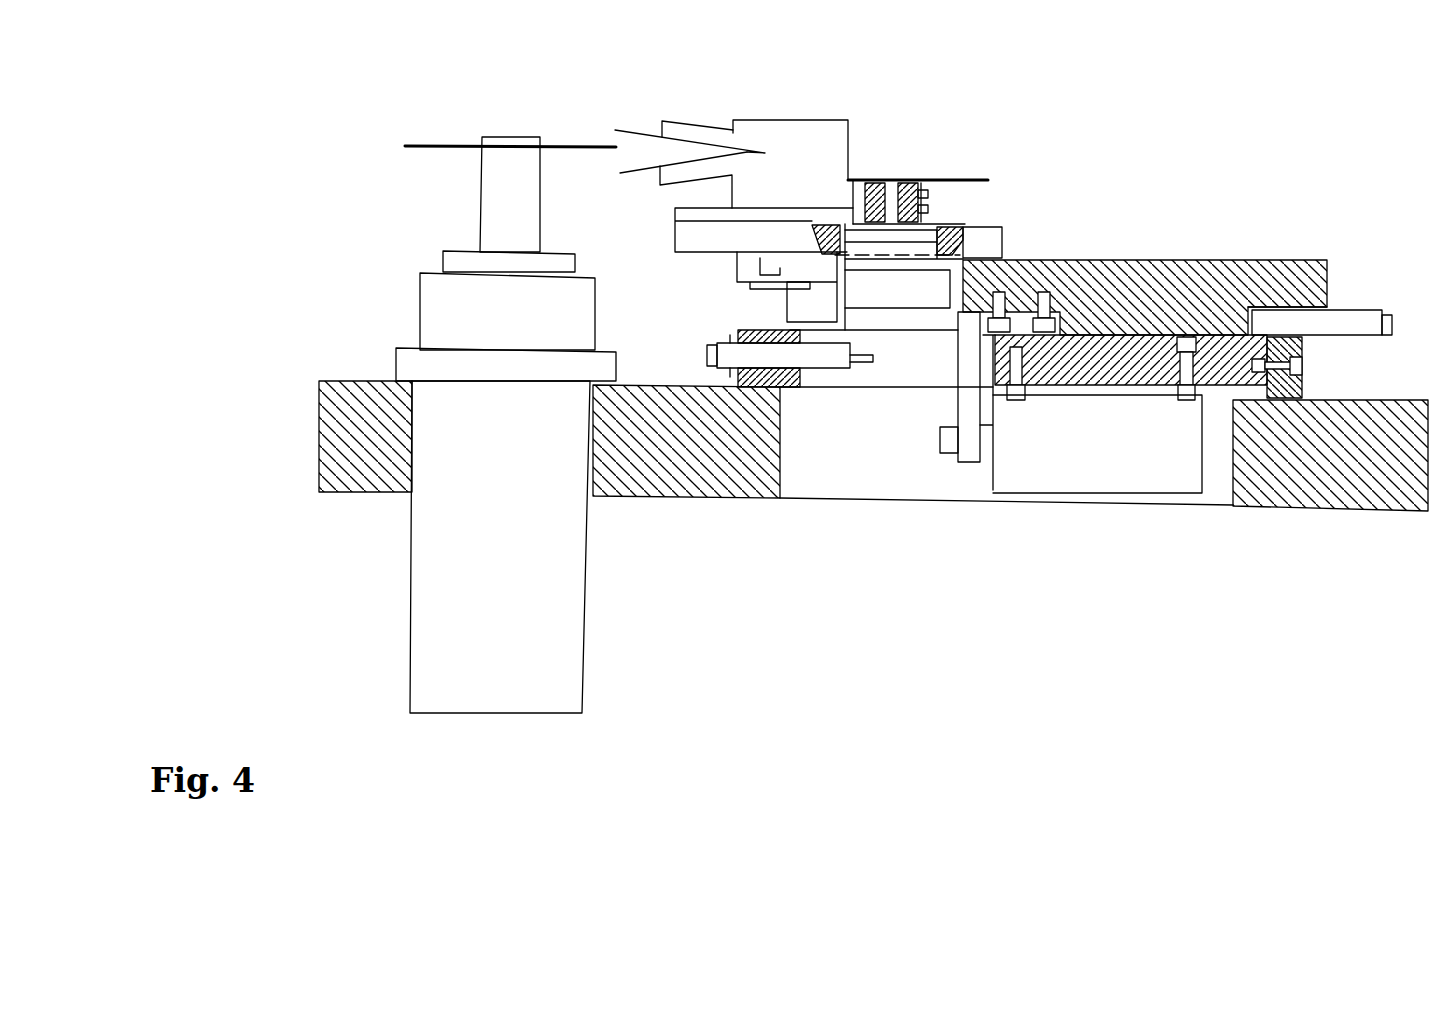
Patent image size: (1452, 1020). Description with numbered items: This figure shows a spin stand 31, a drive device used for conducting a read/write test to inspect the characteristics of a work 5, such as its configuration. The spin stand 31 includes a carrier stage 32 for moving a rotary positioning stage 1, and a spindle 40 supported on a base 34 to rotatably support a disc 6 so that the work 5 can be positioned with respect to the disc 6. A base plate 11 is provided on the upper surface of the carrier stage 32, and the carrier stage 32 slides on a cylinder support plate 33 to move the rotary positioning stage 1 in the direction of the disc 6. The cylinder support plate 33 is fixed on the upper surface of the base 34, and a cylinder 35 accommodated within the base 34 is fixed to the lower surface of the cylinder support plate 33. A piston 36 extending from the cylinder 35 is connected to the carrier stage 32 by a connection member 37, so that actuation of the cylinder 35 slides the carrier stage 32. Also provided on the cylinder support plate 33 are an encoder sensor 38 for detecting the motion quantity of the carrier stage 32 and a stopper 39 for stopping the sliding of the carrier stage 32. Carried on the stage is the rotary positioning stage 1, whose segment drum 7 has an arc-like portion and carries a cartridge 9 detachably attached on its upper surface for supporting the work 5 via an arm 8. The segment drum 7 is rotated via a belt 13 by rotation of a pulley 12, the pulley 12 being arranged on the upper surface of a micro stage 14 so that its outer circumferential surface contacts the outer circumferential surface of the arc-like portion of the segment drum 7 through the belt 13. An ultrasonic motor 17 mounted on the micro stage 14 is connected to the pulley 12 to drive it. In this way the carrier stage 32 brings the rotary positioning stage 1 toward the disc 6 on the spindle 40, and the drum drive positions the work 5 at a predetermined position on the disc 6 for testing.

The rotary positioning stage 1 is at (796, 99).
The work 5 is at (616, 130).
The disc 6 is at (425, 145).
The segment drum 7 is at (676, 213).
The arm 8 is at (677, 133).
The cartridge 9 is at (745, 135).
The base plate 11 is at (993, 243).
The pulley 12 is at (872, 180).
The belt 13 is at (927, 227).
The micro stage 14 is at (928, 227).
The ultrasonic motor 17 is at (925, 287).
The spin stand 31 is at (1052, 130).
The carrier stage 32 is at (1243, 267).
The cylinder support plate 33 is at (1145, 350).
The base 34 is at (1347, 503).
The cylinder 35 is at (1187, 475).
The piston 36 is at (948, 447).
The connection member 37 is at (967, 402).
The encoder sensor 38 is at (1355, 320).
The stopper 39 is at (837, 355).
The spindle 40 is at (565, 652).